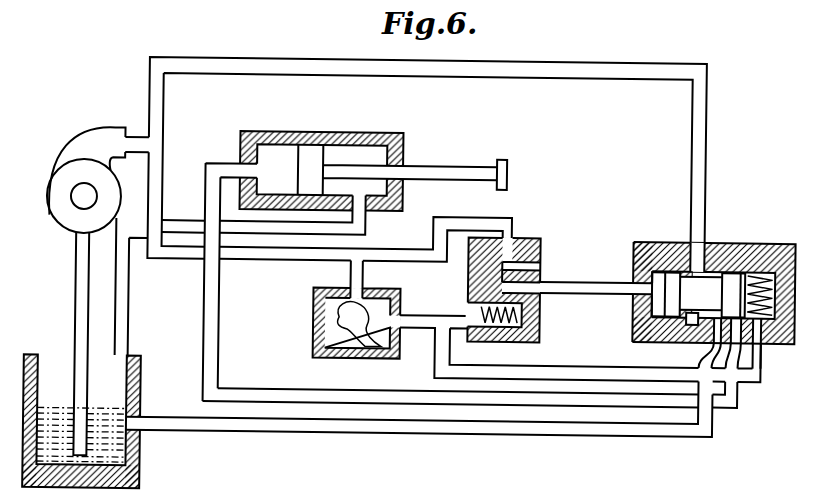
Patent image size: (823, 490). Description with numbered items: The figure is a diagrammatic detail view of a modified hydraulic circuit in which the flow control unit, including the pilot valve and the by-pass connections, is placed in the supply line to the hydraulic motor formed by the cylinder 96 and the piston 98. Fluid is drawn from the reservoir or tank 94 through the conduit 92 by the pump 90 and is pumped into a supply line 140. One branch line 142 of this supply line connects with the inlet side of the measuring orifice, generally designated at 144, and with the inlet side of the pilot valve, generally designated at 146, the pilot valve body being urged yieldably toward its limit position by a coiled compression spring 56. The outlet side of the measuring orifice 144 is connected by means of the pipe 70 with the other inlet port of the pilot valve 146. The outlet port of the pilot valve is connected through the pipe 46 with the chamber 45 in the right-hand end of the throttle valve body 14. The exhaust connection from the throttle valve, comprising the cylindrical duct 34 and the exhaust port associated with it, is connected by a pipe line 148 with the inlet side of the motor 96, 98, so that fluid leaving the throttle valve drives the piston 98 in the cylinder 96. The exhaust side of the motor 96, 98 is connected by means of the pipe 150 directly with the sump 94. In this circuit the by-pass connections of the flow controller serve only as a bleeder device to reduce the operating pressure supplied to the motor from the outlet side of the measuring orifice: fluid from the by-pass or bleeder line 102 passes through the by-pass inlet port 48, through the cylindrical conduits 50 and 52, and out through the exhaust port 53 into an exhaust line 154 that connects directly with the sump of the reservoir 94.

The throttle valve body 14 is at (704, 264).
The cylindrical duct 34 is at (783, 242).
The chamber 45 is at (634, 271).
The pipe 46 is at (583, 280).
The by-pass inlet port 48 is at (689, 246).
The cylindrical conduit 50 is at (702, 274).
The cylindrical conduit 52 is at (720, 279).
The exhaust port 53 is at (704, 339).
The coiled compression spring 56 is at (544, 316).
The pipe 70 is at (417, 313).
The pump 90 is at (54, 204).
The conduit 92 is at (80, 292).
The tank 94 is at (138, 460).
The cylinder 96 is at (283, 132).
The piston 98 is at (309, 154).
The by-pass duct 102 is at (542, 60).
The supply line 140 is at (138, 142).
The branch line 142 is at (263, 255).
The orifice 144 is at (314, 334).
The pilot valve 146 is at (517, 237).
The pipe line 148 is at (321, 394).
The pipe 150 is at (130, 300).
The exhaust line 154 is at (410, 434).